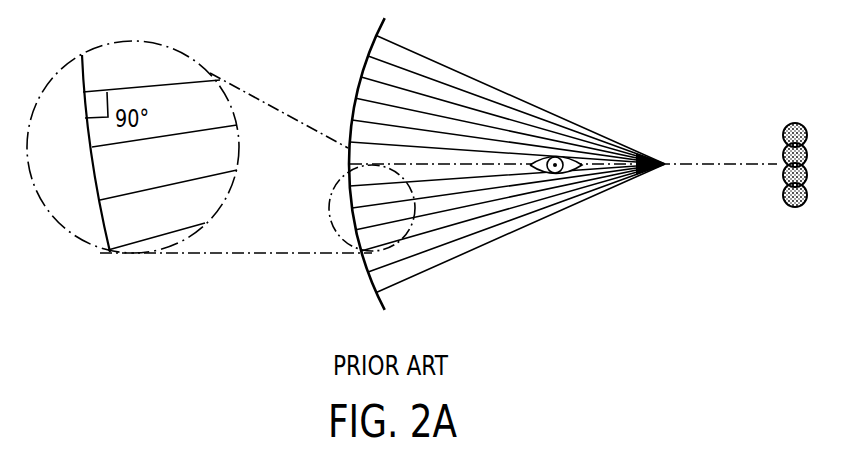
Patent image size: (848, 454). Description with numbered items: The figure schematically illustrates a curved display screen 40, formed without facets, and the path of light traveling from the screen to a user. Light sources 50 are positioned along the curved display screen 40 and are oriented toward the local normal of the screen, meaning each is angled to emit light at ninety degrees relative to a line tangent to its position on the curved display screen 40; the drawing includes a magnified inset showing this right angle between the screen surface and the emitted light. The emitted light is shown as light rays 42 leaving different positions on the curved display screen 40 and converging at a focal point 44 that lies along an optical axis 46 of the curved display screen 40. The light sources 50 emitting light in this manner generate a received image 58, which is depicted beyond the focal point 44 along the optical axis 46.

The curved display screen 40 is at (355, 110).
The light sources 50 is at (365, 78).
The light rays 42 is at (528, 99).
The focal point 44 is at (664, 160).
The optical axis 46 is at (763, 167).
The received image 58 is at (783, 148).